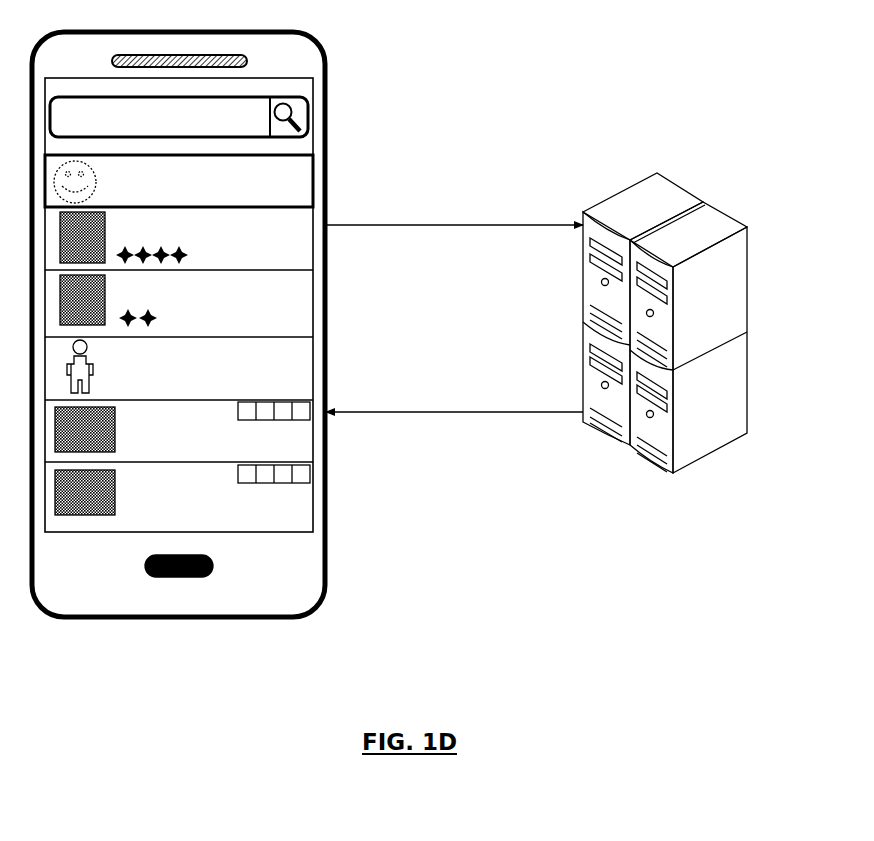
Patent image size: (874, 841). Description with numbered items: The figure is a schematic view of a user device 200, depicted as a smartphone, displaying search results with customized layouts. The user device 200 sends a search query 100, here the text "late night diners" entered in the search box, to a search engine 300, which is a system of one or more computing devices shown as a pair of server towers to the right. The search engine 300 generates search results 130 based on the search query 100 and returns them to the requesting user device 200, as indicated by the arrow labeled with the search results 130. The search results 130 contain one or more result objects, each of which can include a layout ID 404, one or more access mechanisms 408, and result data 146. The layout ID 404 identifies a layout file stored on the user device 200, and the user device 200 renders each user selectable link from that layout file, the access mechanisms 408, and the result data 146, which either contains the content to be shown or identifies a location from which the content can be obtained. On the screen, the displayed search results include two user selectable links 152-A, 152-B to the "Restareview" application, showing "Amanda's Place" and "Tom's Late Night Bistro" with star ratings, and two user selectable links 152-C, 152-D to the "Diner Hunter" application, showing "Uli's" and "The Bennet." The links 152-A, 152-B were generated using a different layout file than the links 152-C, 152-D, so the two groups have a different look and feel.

The user device 200 is at (316, 41).
The search engine 300 is at (650, 176).
The search query 100 is at (537, 208).
The search results 130 is at (545, 345).
The layout ID 404 is at (427, 357).
The access mechanisms 408 is at (465, 375).
The result data 146 is at (434, 393).
The user selectable link 152-A is at (327, 236).
The user selectable link 152-B is at (327, 299).
The user selectable link 152-C is at (327, 427).
The user selectable link 152-D is at (327, 503).